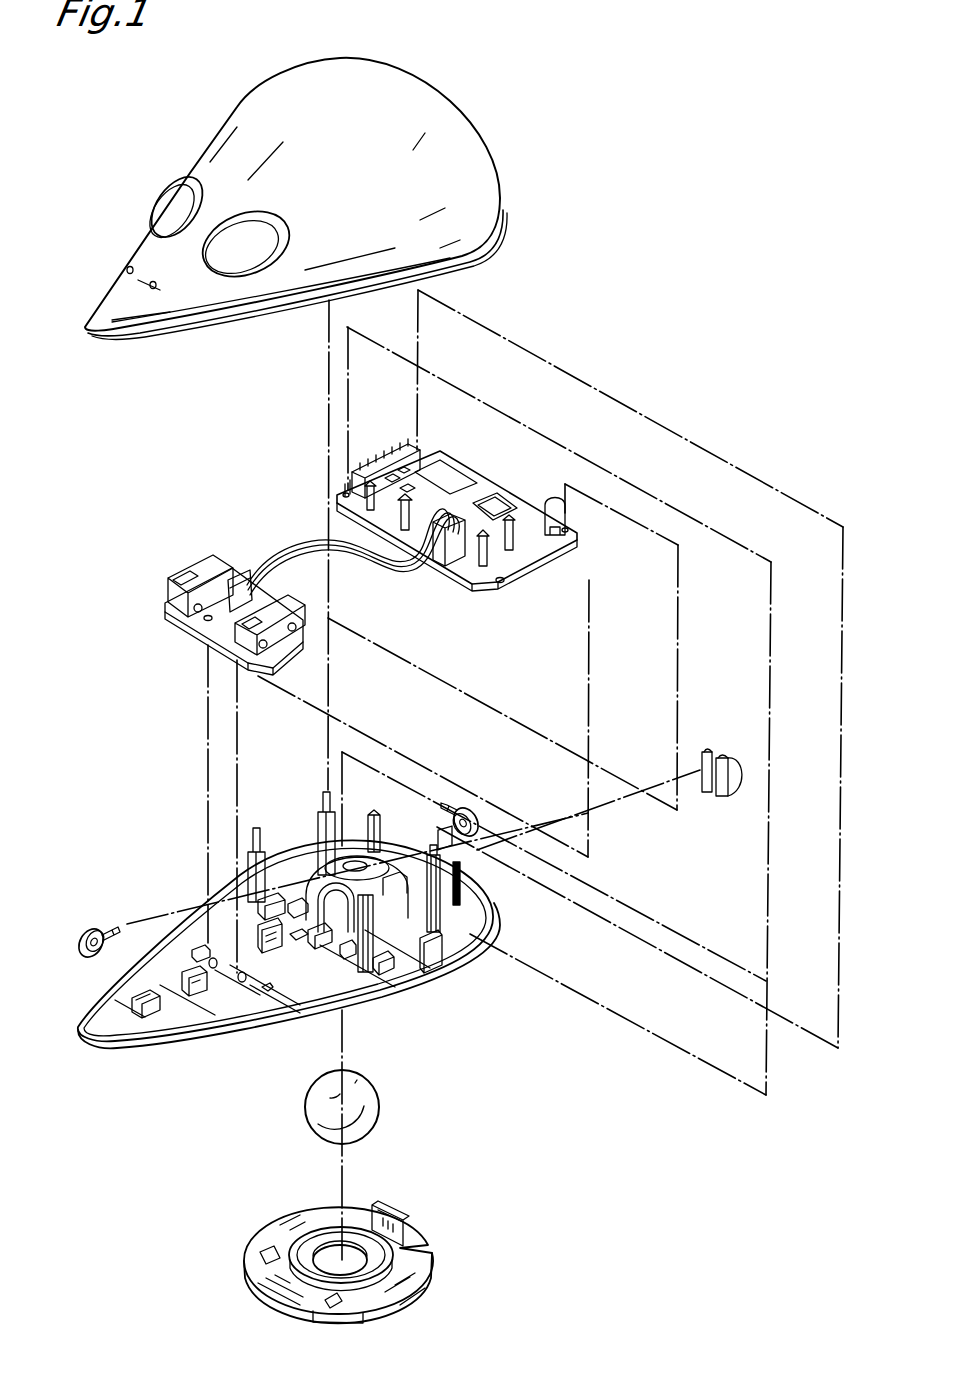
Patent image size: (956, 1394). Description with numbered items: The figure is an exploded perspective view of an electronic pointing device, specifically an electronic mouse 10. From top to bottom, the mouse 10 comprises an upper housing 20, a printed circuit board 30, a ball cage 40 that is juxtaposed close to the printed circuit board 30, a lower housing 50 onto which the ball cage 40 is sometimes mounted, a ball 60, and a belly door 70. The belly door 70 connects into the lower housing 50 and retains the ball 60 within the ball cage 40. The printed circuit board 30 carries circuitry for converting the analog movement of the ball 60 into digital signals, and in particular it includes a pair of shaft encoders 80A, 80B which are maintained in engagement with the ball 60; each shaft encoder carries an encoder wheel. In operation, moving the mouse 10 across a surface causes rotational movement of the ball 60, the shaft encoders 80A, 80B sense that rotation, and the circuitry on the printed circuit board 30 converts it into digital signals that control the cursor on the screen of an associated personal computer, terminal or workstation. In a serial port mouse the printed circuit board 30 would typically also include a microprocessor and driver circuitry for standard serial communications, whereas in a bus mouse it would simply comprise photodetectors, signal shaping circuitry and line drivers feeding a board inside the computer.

The electronic mouse 10 is at (638, 270).
The upper housing 20 is at (475, 152).
The printed circuit board 30 is at (462, 468).
The ball cage 40 is at (313, 858).
The lower housing 50 is at (310, 918).
The ball 60 is at (369, 1101).
The belly door 70 is at (253, 1257).
The shaft encoder 80A is at (448, 803).
The shaft encoder 80B is at (103, 924).